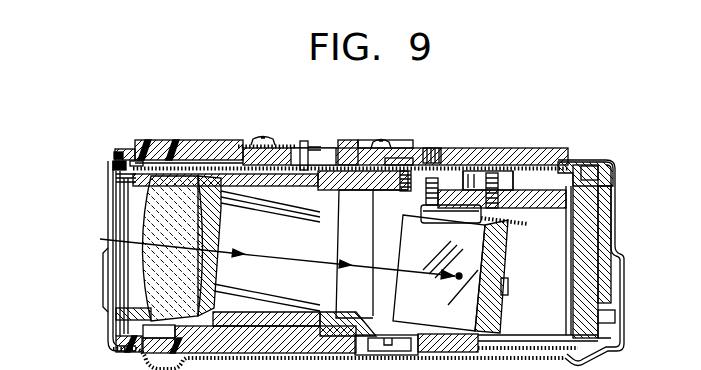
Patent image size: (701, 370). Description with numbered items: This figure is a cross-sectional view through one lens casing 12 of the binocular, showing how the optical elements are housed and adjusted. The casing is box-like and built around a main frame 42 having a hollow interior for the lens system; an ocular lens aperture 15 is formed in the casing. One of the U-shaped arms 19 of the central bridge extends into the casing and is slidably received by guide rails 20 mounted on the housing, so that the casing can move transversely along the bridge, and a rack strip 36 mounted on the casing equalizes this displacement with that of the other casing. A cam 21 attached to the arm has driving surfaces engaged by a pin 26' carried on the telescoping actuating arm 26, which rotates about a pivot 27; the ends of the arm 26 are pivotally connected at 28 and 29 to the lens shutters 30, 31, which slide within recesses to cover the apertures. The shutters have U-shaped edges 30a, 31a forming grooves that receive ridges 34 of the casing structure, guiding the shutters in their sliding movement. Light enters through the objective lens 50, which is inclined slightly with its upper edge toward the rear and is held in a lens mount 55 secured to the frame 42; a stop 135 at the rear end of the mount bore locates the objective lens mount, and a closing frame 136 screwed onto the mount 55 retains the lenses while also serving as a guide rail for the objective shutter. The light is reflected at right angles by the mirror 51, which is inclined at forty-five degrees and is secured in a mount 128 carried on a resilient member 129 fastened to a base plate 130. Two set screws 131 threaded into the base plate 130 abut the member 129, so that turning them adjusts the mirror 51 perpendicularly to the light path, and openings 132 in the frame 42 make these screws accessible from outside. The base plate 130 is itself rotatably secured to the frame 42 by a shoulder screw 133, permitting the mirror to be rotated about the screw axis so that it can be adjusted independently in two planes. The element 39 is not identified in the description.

The lens casing 12 is at (533, 128).
The ocular lens aperture 15 is at (97, 300).
The arm 19 is at (213, 133).
The guide rail 20 is at (153, 134).
The cam 21 is at (271, 138).
The actuating arm 26 is at (350, 146).
The pin 26' is at (318, 140).
The pivot 27 is at (391, 162).
The pivotal connection 28 is at (106, 147).
The pivotal connection 29 is at (594, 159).
The lens shutter 30 is at (105, 196).
The U-shaped edge 30a is at (106, 156).
The lens shutter 31 is at (607, 216).
The U-shaped edge 31a is at (604, 309).
The ridge 34 is at (596, 281).
The rack strip 36 is at (268, 178).
The bottom band 39 is at (289, 352).
The main frame 42 is at (333, 185).
The objective lens 50 is at (167, 136).
The mirror 51 is at (396, 280).
The lens mount 55 is at (183, 165).
The mount 128 is at (498, 212).
The resilient member 129 is at (414, 203).
The base plate 130 is at (556, 185).
The set screw 131 is at (478, 168).
The opening 132 is at (413, 158).
The shoulder screw 133 is at (477, 155).
The stop 135 is at (122, 141).
The closing frame 136 is at (108, 168).